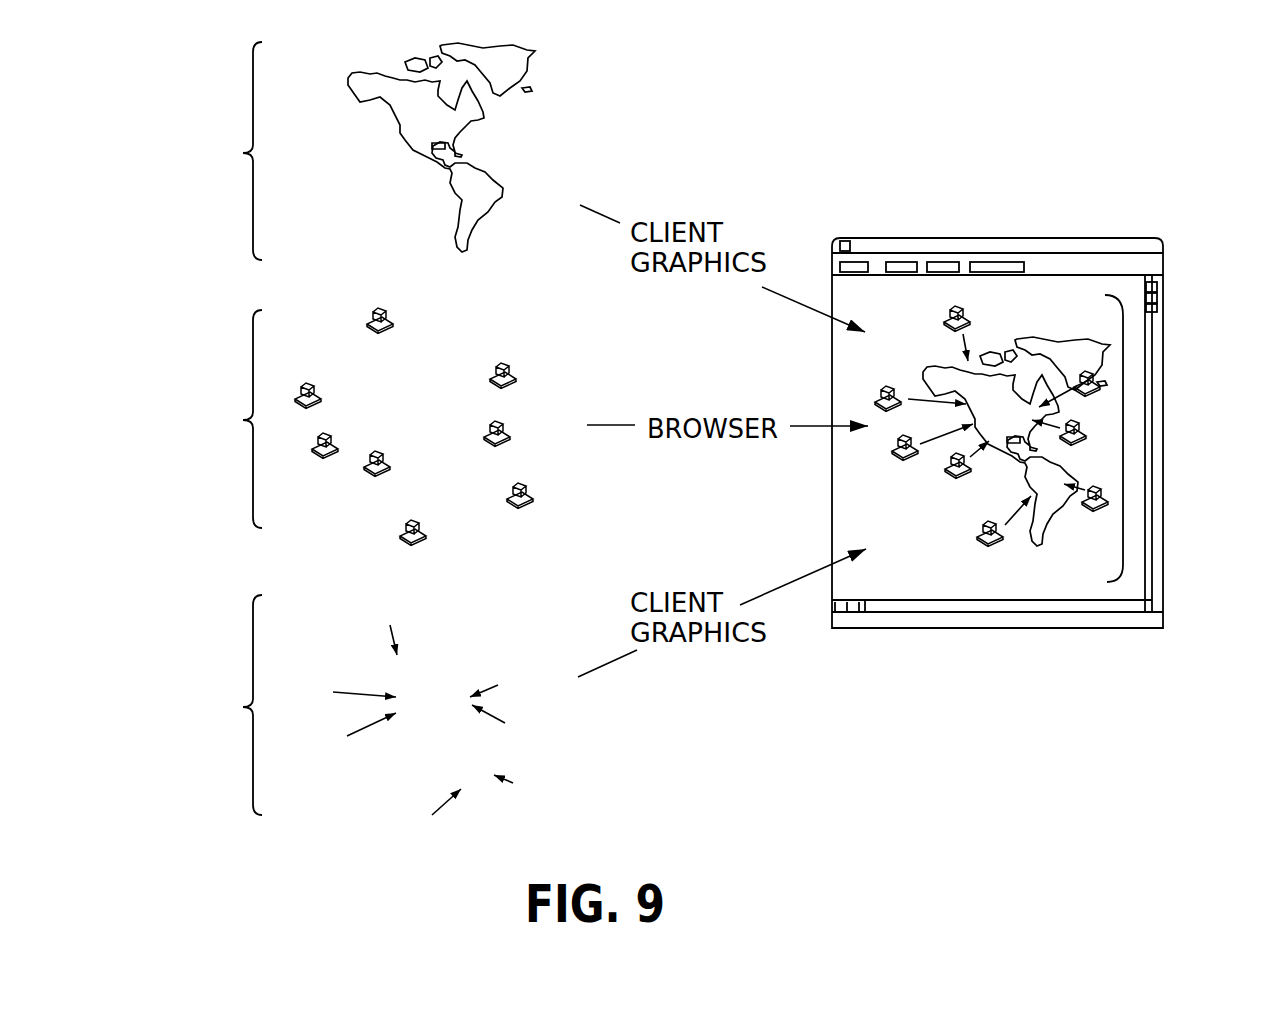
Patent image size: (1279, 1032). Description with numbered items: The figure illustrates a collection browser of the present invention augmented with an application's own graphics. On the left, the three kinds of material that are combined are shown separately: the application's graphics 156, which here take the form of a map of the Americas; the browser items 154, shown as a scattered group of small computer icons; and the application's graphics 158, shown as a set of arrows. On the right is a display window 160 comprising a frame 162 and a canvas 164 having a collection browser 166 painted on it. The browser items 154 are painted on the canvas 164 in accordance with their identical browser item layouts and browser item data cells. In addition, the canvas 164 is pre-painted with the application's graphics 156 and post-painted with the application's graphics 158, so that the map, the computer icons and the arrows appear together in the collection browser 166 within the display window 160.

The browser items 154 is at (243, 420).
The application's graphics 156 is at (243, 153).
The application's graphics 158 is at (243, 707).
The display window 160 is at (1093, 236).
The frame 162 is at (1148, 263).
The canvas 164 is at (1093, 583).
The collection browser 166 is at (1152, 440).